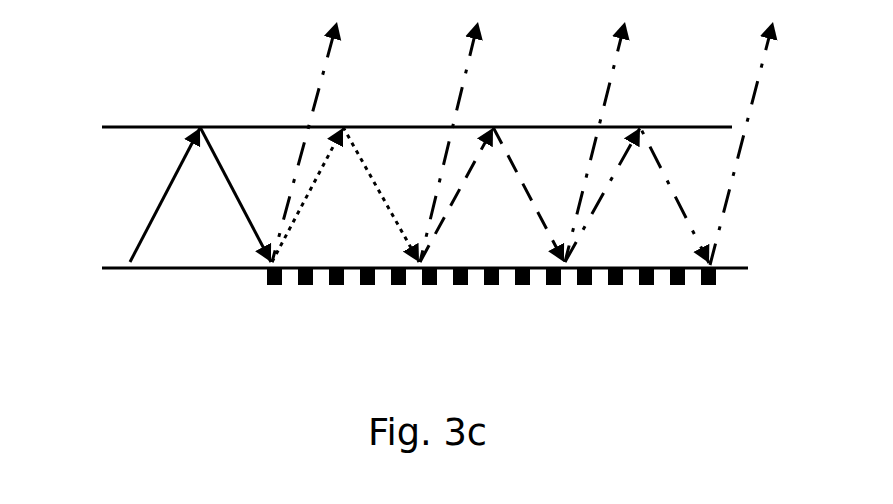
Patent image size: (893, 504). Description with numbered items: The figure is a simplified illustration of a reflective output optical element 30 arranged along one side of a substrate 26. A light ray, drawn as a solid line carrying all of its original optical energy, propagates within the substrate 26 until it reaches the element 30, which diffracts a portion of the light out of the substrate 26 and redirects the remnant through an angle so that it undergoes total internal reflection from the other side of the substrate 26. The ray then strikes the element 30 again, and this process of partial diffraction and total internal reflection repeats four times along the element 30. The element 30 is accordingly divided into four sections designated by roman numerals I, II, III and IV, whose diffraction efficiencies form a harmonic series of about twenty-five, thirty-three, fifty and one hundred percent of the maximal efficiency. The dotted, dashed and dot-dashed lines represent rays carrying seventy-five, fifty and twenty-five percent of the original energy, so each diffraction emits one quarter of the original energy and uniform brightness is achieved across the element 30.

The substrate 26 is at (180, 194).
The reflective output optical element 30 is at (267, 277).
The first section of the output optical element I is at (274, 295).
The second section of the output optical element II is at (427, 295).
The third section of the output optical element III is at (565, 295).
The fourth section of the output optical element IV is at (703, 295).